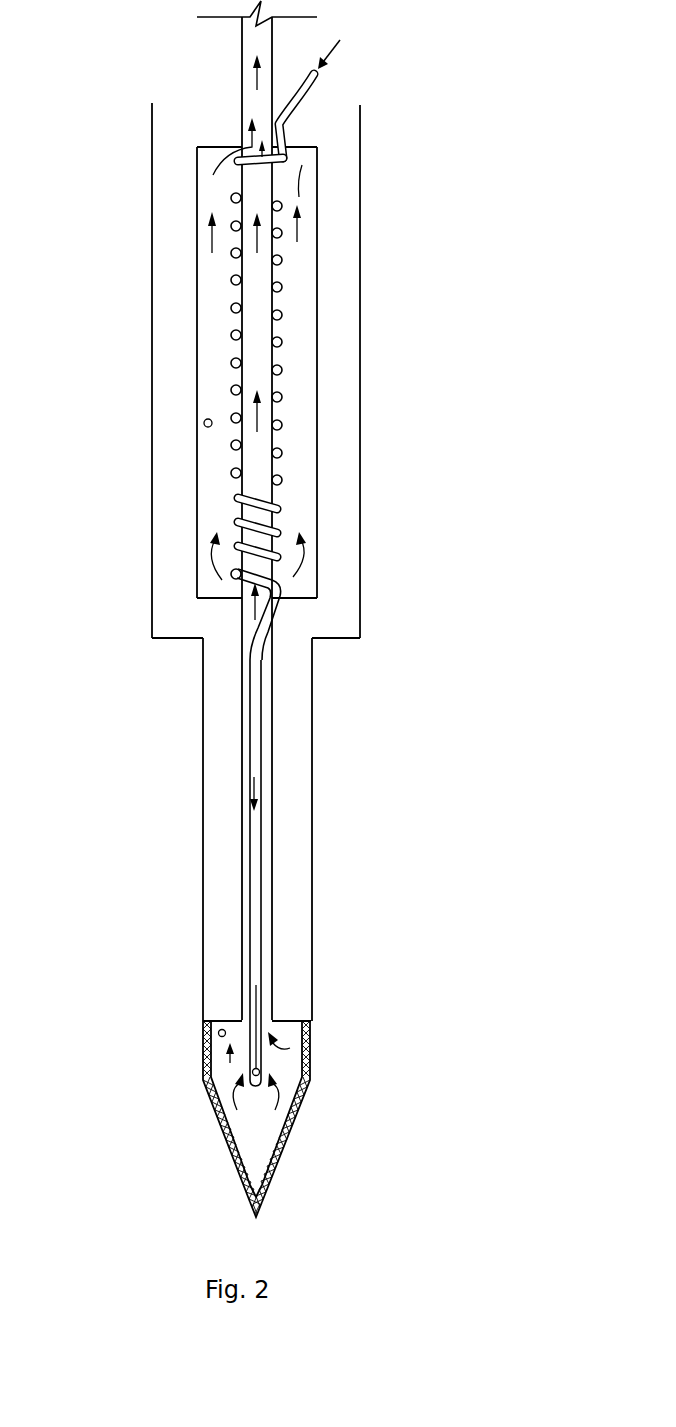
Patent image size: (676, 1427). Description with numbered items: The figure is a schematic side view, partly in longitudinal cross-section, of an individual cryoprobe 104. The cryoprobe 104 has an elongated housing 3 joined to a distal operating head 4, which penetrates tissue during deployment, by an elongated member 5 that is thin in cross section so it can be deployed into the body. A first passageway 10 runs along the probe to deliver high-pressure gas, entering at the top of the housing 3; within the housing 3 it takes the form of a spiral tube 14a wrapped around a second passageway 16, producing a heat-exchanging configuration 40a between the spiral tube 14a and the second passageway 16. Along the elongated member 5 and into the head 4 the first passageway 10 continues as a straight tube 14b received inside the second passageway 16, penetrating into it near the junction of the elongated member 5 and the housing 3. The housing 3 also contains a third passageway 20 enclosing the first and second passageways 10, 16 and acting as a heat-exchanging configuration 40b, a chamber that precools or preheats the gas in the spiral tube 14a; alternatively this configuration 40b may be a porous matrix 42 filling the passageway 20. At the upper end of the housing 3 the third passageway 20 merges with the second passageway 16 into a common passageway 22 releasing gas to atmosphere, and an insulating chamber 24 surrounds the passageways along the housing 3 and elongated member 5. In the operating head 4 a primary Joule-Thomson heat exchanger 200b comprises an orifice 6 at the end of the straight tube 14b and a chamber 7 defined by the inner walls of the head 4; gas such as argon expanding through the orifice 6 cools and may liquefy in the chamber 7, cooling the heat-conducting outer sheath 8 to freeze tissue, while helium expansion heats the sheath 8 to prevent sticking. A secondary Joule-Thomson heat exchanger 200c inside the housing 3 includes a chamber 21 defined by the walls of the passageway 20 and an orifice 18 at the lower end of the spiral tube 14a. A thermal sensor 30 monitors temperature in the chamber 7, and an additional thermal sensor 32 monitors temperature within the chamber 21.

The elongated housing 3 is at (360, 380).
The distal operating head 4 is at (248, 1193).
The elongated member 5 is at (312, 877).
The orifice 6 is at (259, 1071).
The chamber 7 is at (272, 1138).
The outer sheath 8 is at (218, 1123).
The first passageway 10 is at (297, 107).
The spiral tube 14a is at (288, 530).
The straight tube 14b is at (253, 747).
The second passageway 16 is at (240, 378).
The orifice 18 is at (236, 576).
The third passageway 20 is at (207, 468).
The chamber 21 is at (313, 598).
The common passageway 22 is at (248, 107).
The insulating chamber 24 is at (173, 273).
The thermal sensor 30 is at (219, 1033).
The additional thermal sensor 32 is at (205, 423).
The heat-exchanging configuration 40a is at (273, 467).
The heat-exchanging configuration 40b is at (233, 462).
The porous matrix 42 is at (215, 523).
The cryoprobe 104 is at (363, 285).
The primary Joule-Thomson heat exchanger 200b is at (267, 1122).
The secondary Joule-Thomson heat exchanger 200c is at (290, 415).